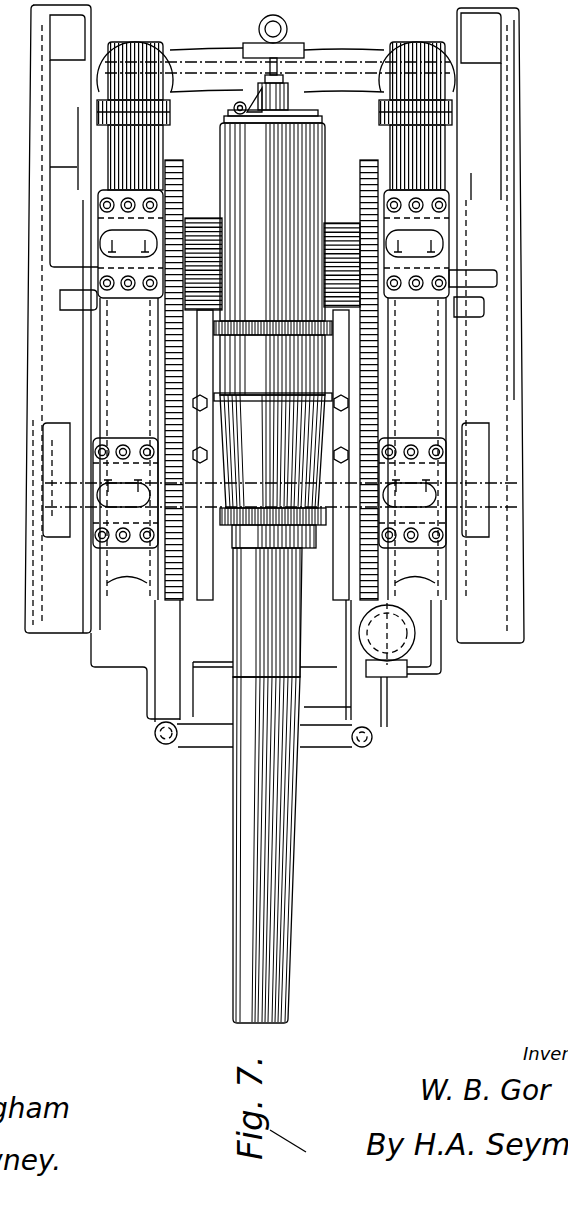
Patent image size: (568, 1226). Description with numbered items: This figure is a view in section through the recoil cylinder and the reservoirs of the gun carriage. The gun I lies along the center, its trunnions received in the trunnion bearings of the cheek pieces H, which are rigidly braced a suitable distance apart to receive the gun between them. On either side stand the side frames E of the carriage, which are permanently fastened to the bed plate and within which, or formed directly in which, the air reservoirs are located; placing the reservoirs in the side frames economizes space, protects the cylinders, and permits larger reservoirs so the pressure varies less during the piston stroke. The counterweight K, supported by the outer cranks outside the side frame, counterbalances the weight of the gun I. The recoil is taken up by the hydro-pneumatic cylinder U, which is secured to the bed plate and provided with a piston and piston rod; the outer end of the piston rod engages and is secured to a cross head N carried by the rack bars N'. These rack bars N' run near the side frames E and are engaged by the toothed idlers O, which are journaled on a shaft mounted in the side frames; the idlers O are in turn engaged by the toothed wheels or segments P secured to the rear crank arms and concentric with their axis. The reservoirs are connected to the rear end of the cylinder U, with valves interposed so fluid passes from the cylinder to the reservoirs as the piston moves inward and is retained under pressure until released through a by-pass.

The cheek pieces H is at (25, 368).
The counterweight K is at (511, 340).
The hydro-pneumatic cylinder U is at (297, 82).
The toothed wheels or segments P is at (168, 186).
The side frames E is at (282, 369).
The toothed idlers O is at (352, 405).
The gun I is at (273, 573).
The rack bars N' is at (267, 671).
The cross head N is at (263, 765).